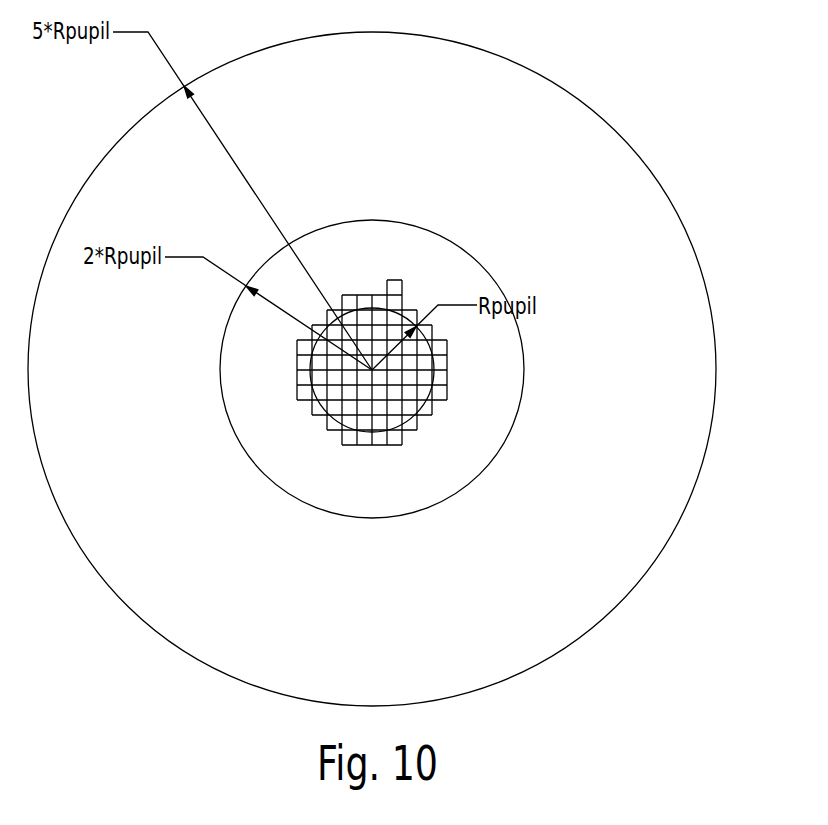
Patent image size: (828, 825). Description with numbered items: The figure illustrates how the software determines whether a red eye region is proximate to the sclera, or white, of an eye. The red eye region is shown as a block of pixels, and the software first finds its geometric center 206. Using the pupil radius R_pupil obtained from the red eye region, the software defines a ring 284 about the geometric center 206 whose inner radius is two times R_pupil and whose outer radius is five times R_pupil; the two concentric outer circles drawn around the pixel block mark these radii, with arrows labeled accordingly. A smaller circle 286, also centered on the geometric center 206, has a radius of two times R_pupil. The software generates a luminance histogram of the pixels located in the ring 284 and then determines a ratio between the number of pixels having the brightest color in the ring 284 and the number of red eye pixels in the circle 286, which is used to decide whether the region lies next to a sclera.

The geometric center 206 is at (316, 410).
The ring 284 is at (602, 502).
The circle 286 is at (495, 381).